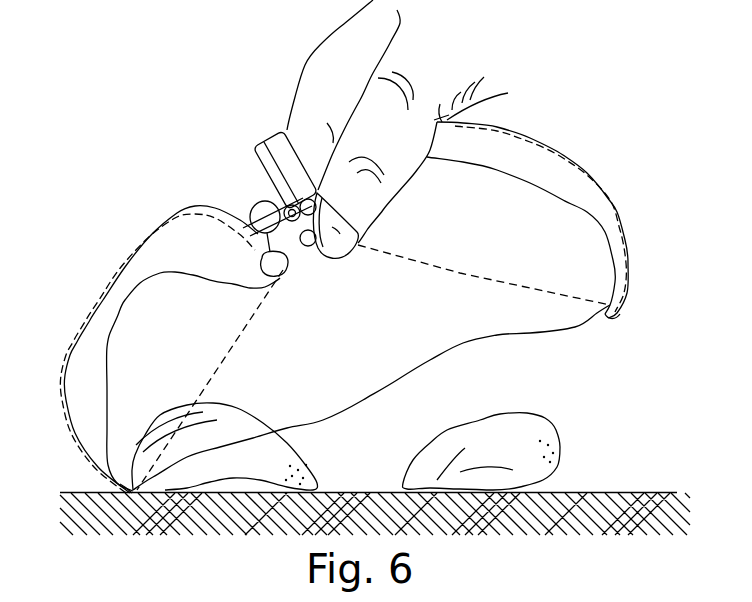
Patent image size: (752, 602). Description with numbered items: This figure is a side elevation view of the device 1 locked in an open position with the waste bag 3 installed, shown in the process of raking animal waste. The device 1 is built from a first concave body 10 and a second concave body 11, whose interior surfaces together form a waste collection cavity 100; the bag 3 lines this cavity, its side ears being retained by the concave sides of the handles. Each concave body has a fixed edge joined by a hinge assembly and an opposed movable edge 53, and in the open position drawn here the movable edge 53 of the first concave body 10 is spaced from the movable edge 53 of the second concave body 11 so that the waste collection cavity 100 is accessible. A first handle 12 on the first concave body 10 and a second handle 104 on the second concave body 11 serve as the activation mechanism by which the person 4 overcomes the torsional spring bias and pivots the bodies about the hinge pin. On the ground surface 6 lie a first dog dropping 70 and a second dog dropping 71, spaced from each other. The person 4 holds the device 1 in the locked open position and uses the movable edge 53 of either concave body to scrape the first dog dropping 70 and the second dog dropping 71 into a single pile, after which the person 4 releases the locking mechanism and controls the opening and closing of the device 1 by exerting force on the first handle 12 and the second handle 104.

The device 1 is at (157, 165).
The waste bag 3 is at (575, 327).
The person 4 is at (303, 37).
The ground surface 6 is at (617, 492).
The first concave body 10 is at (587, 197).
The second concave body 11 is at (82, 352).
The first handle 12 is at (287, 140).
The movable edge 53 is at (613, 313).
The first dog dropping 70 is at (307, 463).
The second dog dropping 71 is at (533, 423).
The waste collection cavity 100 is at (138, 338).
The second handle 104 is at (264, 153).